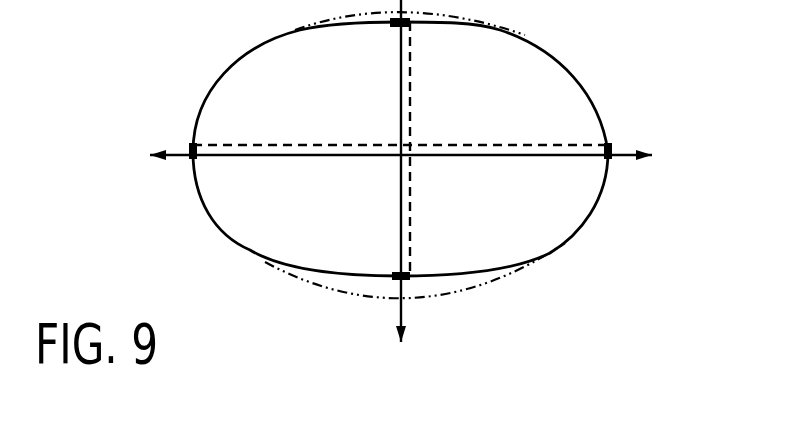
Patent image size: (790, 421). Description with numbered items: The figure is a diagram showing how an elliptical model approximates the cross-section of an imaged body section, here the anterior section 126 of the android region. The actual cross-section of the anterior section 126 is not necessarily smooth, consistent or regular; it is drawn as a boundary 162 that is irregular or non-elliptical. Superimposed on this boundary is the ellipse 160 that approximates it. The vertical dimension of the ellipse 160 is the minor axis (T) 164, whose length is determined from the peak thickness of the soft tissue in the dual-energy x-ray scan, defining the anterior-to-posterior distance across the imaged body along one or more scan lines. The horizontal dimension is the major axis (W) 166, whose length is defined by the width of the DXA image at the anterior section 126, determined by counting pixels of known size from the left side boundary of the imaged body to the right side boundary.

The anterior section 126 is at (640, 190).
The ellipse 160 is at (497, 285).
The boundary 162 is at (557, 62).
The minor axis (T) 164 is at (393, 312).
The major axis (W) 166 is at (180, 158).